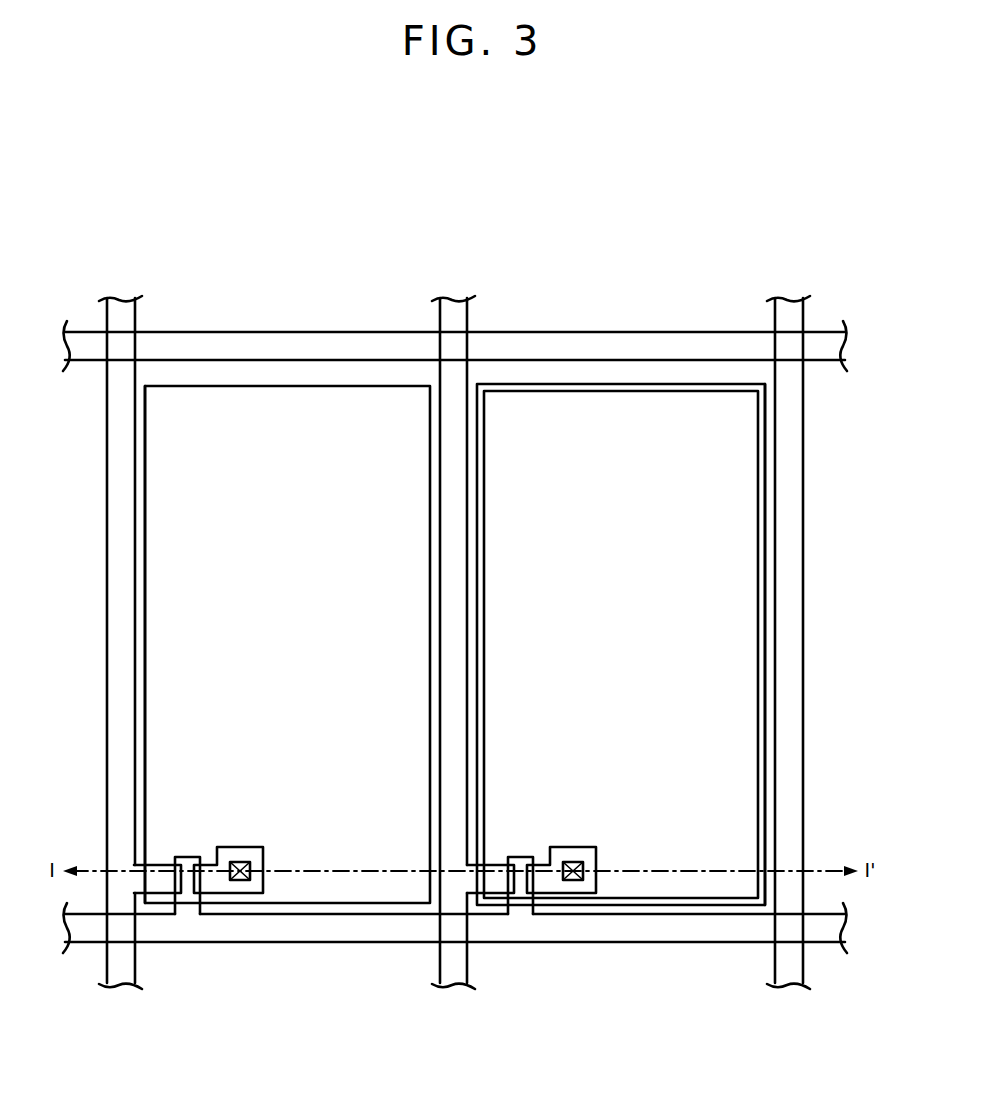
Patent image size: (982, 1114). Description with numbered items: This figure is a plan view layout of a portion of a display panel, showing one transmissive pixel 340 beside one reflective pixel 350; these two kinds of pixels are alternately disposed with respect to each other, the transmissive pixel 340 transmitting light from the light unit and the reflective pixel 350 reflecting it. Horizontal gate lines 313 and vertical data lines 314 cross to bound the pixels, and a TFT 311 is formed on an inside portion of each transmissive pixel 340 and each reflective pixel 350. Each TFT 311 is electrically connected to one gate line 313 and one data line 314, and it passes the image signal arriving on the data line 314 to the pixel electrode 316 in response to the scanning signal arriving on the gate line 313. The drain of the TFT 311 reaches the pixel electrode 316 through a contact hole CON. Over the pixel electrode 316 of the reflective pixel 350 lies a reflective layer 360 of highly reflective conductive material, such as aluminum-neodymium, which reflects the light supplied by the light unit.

The thin film transistor 311 is at (191, 922).
The gate line 313 is at (322, 928).
The data line 314 is at (120, 762).
The pixel electrode 316 is at (145, 472).
The transmissive pixel 340 is at (291, 414).
The reflective pixel 350 is at (608, 414).
The reflective layer 360 is at (758, 513).
The contact hole CON is at (249, 896).